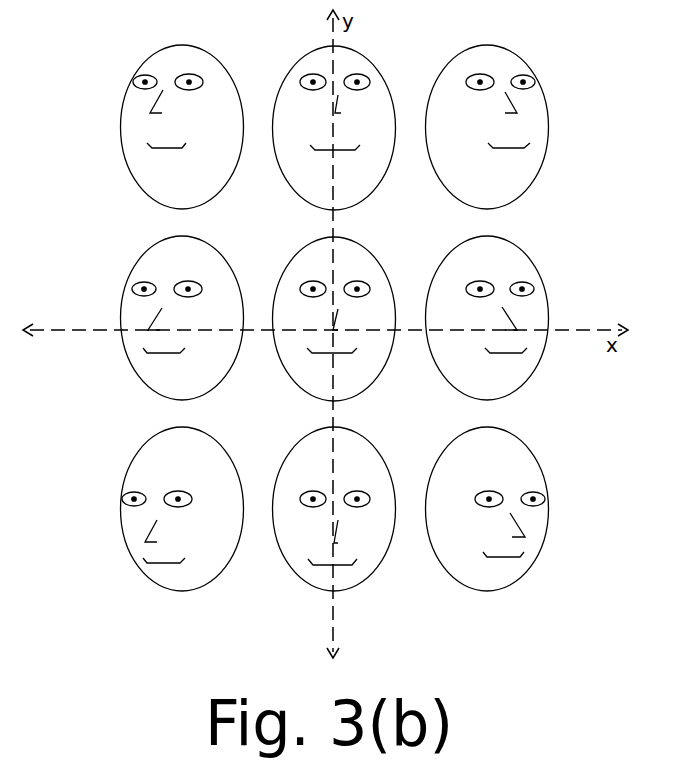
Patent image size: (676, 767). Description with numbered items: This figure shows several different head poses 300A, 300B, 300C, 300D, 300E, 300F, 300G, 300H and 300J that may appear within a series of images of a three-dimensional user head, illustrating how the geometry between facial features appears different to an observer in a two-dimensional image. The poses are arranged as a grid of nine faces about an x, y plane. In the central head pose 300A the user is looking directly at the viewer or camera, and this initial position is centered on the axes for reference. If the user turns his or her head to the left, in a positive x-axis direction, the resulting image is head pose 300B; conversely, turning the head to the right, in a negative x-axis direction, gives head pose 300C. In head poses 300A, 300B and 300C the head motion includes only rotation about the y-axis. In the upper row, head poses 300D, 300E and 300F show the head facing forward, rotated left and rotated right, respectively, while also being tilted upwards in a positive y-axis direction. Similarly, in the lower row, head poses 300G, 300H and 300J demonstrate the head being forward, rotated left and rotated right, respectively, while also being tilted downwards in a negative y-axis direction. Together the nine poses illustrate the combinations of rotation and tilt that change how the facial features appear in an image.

The head pose 300A is at (298, 385).
The head pose 300B is at (452, 385).
The head pose 300C is at (147, 385).
The head pose 300D is at (297, 194).
The head pose 300E is at (452, 194).
The head pose 300F is at (147, 194).
The head pose 300G is at (298, 574).
The head pose 300H is at (452, 574).
The head pose 300J is at (148, 574).